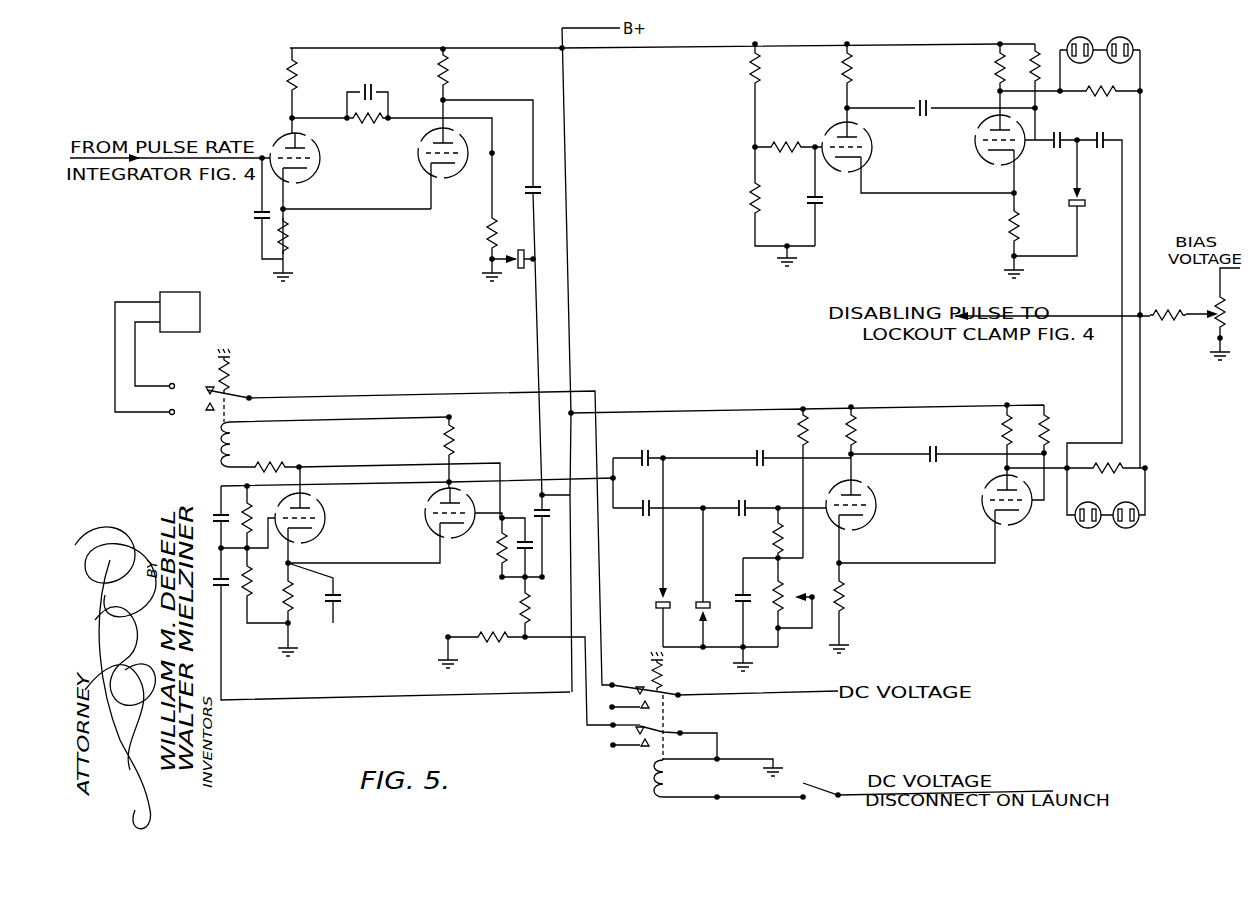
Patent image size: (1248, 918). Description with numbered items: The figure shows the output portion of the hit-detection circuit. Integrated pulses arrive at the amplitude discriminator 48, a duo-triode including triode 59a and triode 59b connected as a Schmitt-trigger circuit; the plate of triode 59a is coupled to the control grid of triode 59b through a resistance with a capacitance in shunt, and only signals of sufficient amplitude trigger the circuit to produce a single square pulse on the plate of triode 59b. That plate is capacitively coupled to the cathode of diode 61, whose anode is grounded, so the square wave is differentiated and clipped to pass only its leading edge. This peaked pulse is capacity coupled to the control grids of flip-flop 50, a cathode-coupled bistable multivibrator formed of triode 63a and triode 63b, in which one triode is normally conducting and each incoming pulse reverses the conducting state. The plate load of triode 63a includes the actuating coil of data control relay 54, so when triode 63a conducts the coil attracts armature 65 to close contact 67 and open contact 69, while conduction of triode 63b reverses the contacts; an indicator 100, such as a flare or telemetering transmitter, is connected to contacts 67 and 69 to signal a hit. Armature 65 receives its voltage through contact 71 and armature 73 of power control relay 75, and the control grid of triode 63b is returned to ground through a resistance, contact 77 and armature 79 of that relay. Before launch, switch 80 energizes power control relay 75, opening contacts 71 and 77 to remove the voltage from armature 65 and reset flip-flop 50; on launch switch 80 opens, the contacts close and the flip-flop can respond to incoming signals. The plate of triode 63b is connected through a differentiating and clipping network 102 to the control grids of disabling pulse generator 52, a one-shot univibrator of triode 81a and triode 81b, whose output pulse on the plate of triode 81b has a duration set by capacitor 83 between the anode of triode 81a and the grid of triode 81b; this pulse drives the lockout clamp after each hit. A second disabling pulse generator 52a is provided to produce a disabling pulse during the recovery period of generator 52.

The amplitude discriminator 48 is at (408, 270).
The triode 59a is at (304, 183).
The triode 59b is at (442, 178).
The diode 61 is at (520, 249).
The second disabling pulse generator 52a is at (928, 163).
The indicator 100 is at (200, 312).
The relay contact 69 is at (170, 383).
The relay contact 67 is at (169, 413).
The armature 65 is at (239, 396).
The data control relay 54 is at (204, 440).
The flip-flop 50 is at (413, 569).
The triode 63a is at (320, 536).
The triode 63b is at (428, 528).
The differentiating and clipping network 102 is at (722, 495).
The disabling pulse generator 52 is at (859, 527).
The capacitor 83 is at (938, 448).
The triode 81a is at (860, 530).
The triode 81b is at (1004, 530).
The contact 71 is at (636, 706).
The armature 73 is at (672, 688).
The contact 77 is at (610, 733).
The armature 79 is at (683, 731).
The power control relay 75 is at (659, 780).
The switch 80 is at (822, 790).